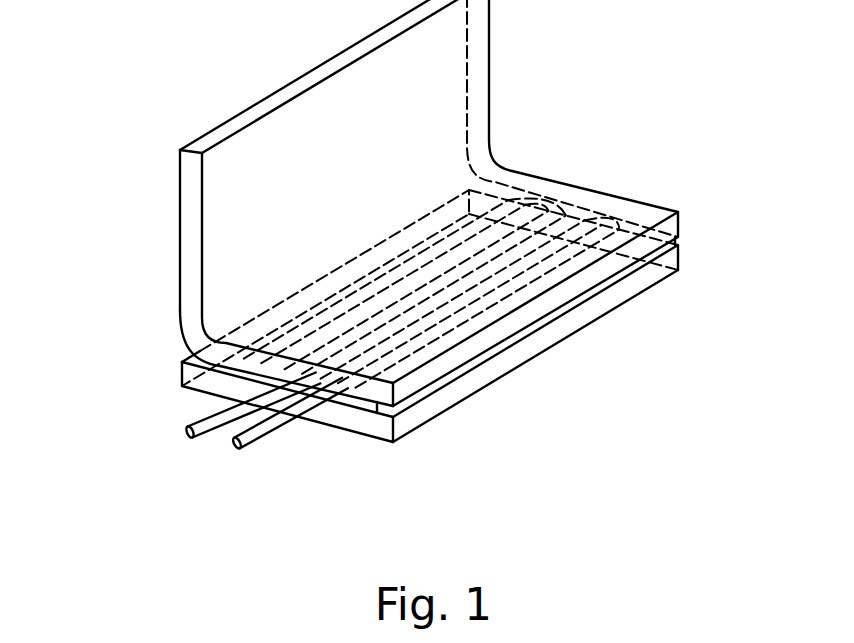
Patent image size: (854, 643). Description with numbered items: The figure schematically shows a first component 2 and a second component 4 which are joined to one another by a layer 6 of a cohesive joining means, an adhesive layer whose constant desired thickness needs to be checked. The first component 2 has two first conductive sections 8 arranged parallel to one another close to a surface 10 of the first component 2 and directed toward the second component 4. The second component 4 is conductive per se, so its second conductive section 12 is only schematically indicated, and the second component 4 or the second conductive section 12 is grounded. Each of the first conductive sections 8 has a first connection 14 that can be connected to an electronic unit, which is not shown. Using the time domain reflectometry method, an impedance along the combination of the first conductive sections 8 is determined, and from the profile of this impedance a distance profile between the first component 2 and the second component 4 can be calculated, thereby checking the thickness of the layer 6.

The first component 2 is at (332, 502).
The second component 4 is at (546, 13).
The layer of cohesive joining means 6 is at (373, 502).
The first conductive sections 8 is at (467, 313).
The surface of the first component 10 is at (700, 163).
The second conductive section 12 is at (214, 347).
The first connection 14 is at (178, 502).